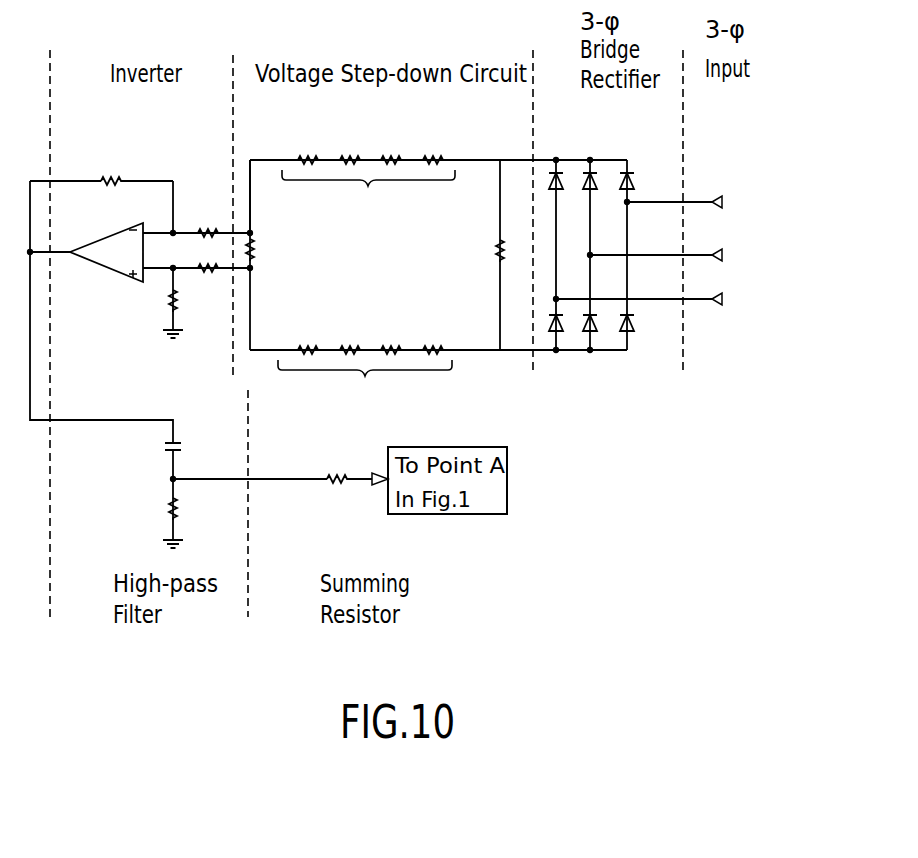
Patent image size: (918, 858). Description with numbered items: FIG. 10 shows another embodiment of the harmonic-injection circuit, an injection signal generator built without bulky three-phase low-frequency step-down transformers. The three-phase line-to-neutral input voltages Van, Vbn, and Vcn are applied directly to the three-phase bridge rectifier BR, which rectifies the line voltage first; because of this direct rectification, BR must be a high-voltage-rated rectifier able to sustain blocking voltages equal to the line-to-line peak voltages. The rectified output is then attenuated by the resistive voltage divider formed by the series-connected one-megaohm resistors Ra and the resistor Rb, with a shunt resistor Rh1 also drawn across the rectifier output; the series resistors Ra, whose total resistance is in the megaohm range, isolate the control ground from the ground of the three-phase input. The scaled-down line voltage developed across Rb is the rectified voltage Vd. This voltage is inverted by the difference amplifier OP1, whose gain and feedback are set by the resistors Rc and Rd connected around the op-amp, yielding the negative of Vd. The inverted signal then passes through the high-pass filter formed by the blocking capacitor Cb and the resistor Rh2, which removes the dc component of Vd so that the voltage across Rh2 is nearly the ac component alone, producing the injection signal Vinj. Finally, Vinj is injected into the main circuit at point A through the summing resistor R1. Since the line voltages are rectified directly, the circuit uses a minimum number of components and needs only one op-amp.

The difference amplifier OP1 is at (106, 252).
The resistors Rd is at (103, 249).
The resistors Rc is at (211, 255).
The resistor Rb is at (266, 253).
The resistors Ra is at (366, 273).
The resistor Rh1 is at (478, 253).
The rectified voltage Vd is at (184, 257).
The three-phase bridge rectifier BR is at (591, 229).
The line-to-neutral input voltage Van is at (695, 203).
The line-to-neutral input voltage Vbn is at (676, 253).
The line-to-neutral input voltage Vcn is at (659, 299).
The blocking capacitor Cb is at (154, 447).
The high-pass filter resistor Rh2 is at (151, 511).
The summing resistor R1 is at (280, 498).
The injection signal Vinj is at (285, 459).